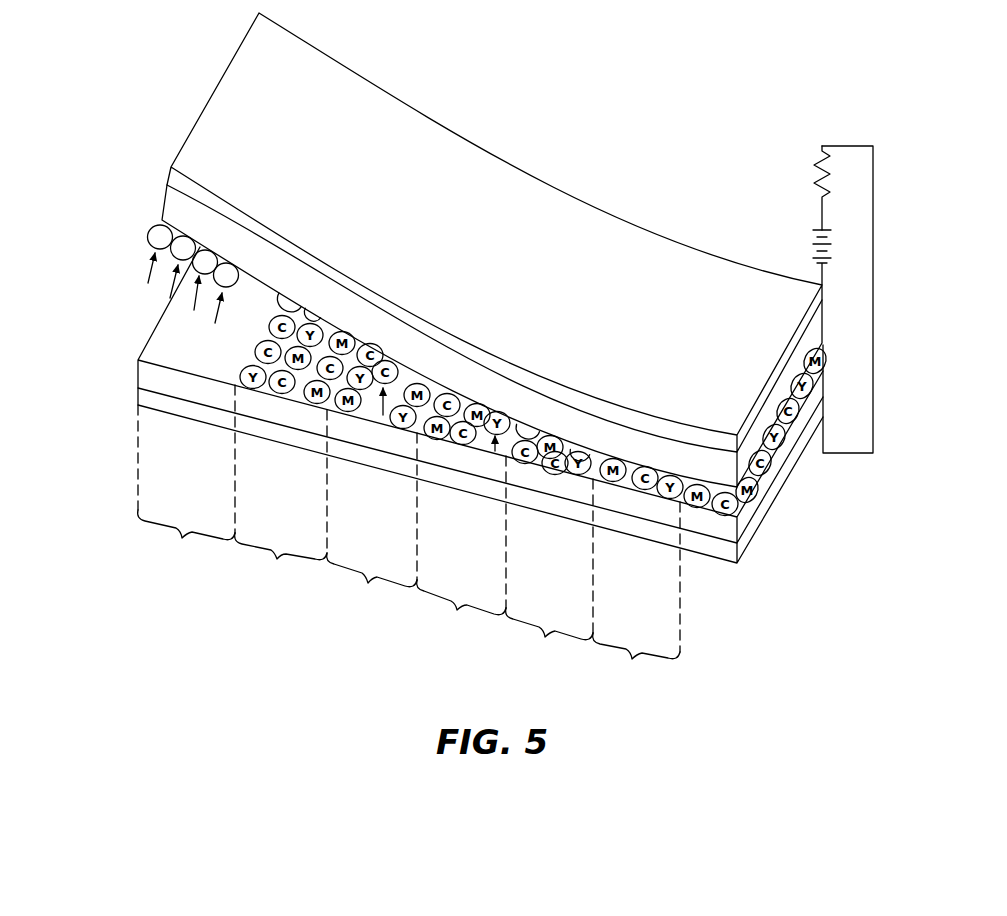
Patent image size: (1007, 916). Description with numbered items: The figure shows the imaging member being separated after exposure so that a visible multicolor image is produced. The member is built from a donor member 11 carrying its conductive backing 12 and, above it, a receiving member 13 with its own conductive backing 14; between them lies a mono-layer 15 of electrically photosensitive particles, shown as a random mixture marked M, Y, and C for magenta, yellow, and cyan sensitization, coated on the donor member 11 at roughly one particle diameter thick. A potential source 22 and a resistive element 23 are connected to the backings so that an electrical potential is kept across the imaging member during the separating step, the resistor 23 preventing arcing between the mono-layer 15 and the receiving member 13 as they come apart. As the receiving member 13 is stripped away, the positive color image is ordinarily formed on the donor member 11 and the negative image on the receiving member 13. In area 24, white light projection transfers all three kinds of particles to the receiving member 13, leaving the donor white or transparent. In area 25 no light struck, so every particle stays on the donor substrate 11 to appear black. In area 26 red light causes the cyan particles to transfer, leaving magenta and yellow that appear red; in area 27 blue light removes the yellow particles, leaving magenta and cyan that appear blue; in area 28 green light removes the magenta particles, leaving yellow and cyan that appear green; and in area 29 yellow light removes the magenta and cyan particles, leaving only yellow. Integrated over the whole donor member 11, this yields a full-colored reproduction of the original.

The donor member 11 is at (138, 374).
The conductive backing 12 is at (138, 397).
The receiving member 13 is at (163, 203).
The conductive backing 14 is at (170, 167).
The mono-layer 15 is at (150, 238).
The potential source 22 is at (808, 242).
The resistive element 23 is at (815, 178).
The area 24 is at (186, 477).
The area 25 is at (281, 501).
The area 26 is at (372, 524).
The area 27 is at (461, 548).
The area 28 is at (549, 571).
The area 29 is at (636, 593).